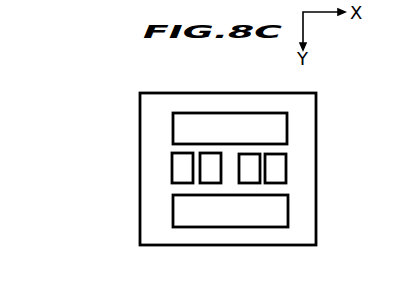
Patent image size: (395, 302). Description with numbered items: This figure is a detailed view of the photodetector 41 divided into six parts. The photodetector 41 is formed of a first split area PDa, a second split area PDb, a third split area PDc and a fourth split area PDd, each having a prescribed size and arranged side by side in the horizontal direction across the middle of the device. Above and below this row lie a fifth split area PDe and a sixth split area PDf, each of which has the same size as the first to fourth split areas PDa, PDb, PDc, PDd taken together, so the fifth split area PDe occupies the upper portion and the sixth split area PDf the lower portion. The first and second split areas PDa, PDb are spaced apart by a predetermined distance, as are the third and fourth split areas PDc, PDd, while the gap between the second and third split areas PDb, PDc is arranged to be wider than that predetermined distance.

The photodetector divided-by-six 41 is at (140, 206).
The first split area PDa is at (177, 158).
The second split area PDb is at (205, 165).
The third split area PDc is at (255, 160).
The fourth split area PDd is at (277, 163).
The fifth split area PDe is at (222, 130).
The sixth split area PDf is at (234, 211).